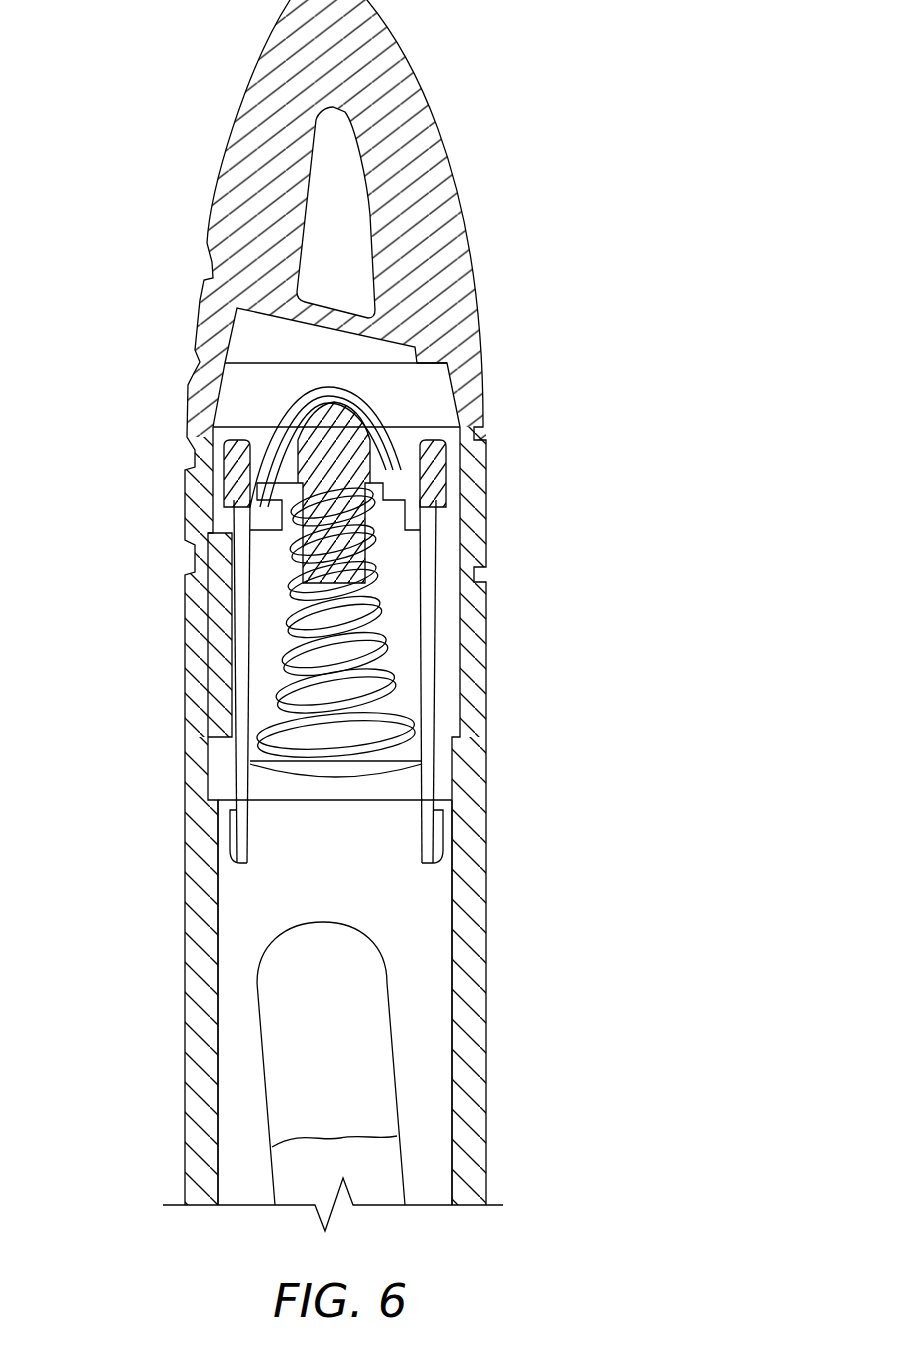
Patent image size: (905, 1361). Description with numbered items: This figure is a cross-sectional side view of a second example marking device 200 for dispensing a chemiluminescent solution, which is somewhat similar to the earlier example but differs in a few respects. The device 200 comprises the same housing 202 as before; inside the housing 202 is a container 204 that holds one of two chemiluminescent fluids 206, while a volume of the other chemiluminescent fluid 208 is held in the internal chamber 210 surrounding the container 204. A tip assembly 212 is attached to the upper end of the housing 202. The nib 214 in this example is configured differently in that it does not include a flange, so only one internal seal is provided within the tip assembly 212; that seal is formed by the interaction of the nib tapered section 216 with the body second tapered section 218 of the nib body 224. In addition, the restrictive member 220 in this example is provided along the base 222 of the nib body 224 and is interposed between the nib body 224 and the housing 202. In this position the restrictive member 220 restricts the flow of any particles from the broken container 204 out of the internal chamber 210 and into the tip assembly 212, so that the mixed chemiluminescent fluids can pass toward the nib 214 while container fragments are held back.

The marking device 200 is at (533, 348).
The housing 202 is at (178, 993).
The container 204 is at (283, 1069).
The chemiluminescent fluid 206 is at (297, 1172).
The chemiluminescent fluid 208 is at (262, 920).
The internal chamber 210 is at (290, 870).
The tip assembly 212 is at (252, 627).
The nib 214 is at (348, 567).
The nib tapered section 216 is at (456, 434).
The body second tapered section 218 is at (282, 468).
The restrictive member 220 is at (258, 803).
The base 222 is at (257, 762).
The nib body 224 is at (427, 657).